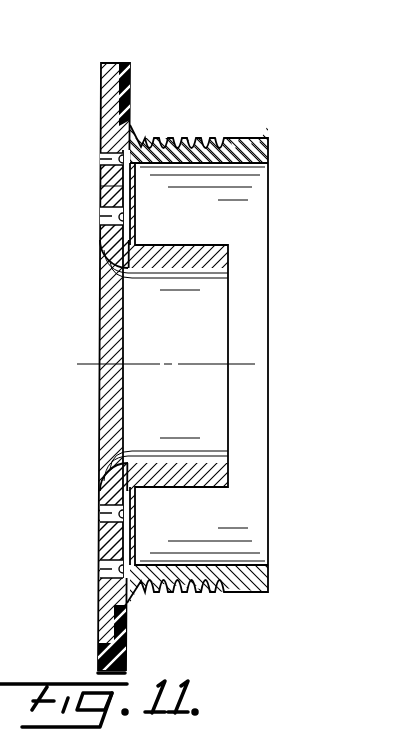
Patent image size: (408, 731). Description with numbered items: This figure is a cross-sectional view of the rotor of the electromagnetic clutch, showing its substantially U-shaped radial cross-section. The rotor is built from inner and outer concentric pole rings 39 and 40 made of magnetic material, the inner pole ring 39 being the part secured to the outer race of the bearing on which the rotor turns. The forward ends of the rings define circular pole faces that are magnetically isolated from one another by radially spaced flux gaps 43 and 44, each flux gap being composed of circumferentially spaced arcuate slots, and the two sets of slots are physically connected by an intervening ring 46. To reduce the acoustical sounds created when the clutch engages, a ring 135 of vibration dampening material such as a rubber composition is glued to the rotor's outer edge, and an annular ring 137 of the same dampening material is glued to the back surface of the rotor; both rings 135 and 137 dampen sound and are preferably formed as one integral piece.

The ring 135 is at (119, 63).
The annular ring 137 is at (133, 97).
The flux gap 43 is at (107, 166).
The intervening ring 46 is at (103, 191).
The flux gap 44 is at (106, 220).
The inner pole ring 39 is at (188, 487).
The outer pole ring 40 is at (254, 592).